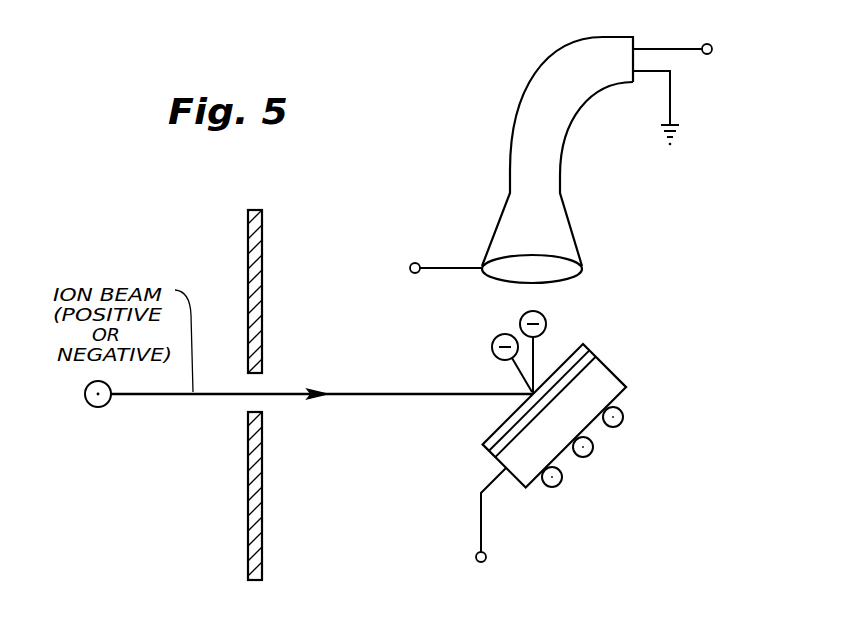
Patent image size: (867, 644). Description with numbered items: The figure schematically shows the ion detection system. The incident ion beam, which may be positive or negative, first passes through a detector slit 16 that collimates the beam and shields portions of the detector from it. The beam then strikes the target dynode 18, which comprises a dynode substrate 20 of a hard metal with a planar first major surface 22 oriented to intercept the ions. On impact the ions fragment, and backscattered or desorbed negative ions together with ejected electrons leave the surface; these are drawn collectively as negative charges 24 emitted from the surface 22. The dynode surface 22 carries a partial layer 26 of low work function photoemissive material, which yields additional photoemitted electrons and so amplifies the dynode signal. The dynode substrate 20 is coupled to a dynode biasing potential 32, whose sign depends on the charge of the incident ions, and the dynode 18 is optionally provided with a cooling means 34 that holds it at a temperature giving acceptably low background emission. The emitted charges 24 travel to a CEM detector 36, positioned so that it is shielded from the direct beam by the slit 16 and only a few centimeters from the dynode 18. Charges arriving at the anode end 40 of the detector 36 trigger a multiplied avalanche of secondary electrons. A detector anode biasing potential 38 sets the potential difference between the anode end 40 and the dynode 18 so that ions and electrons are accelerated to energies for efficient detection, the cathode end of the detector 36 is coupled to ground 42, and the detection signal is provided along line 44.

The detector slit 16 is at (265, 533).
The target dynode 18 is at (568, 417).
The dynode substrate 20 is at (526, 474).
The first major surface 22 is at (551, 369).
The negative charges 24 is at (494, 336).
The partial layer of photoemissive material 26 is at (489, 433).
The dynode biasing potential 32 is at (486, 557).
The cooling means 34 is at (598, 448).
The CEM detector 36 is at (580, 228).
The detector anode biasing potential 38 is at (417, 263).
The anode end 40 is at (562, 272).
The ground 42 is at (675, 123).
The line 44 is at (700, 56).